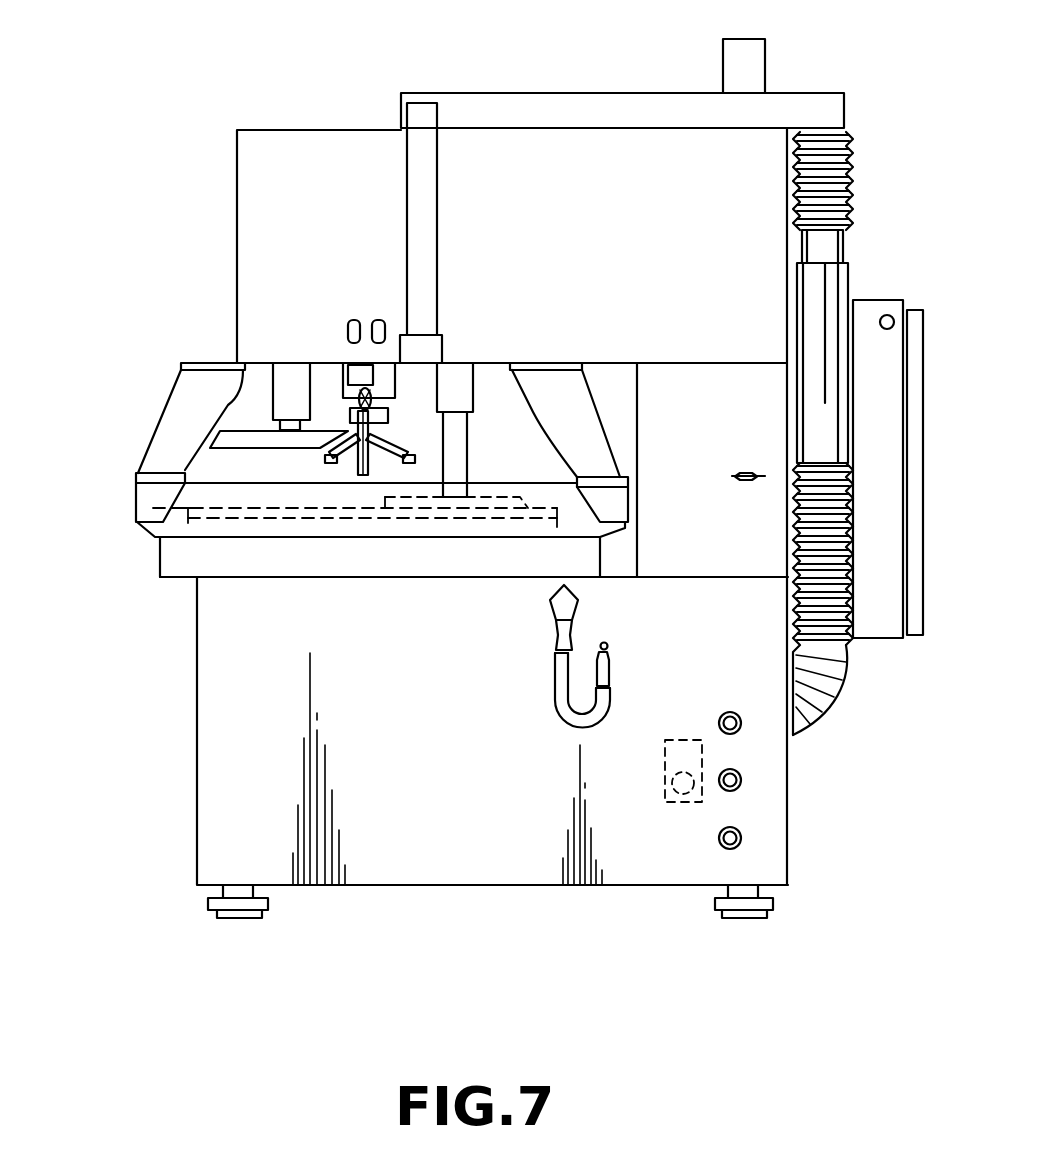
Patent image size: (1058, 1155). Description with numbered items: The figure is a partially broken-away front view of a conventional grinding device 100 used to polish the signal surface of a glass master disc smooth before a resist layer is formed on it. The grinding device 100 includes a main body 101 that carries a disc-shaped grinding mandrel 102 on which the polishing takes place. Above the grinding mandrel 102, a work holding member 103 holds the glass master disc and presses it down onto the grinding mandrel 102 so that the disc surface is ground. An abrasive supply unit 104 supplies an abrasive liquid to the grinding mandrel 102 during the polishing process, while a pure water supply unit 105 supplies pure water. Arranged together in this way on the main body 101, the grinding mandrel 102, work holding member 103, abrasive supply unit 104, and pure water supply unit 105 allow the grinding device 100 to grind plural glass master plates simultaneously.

The grinding device 100 is at (193, 182).
The main body 101 is at (227, 727).
The grinding mandrel 102 is at (227, 525).
The work holding member 103 is at (287, 383).
The abrasive supply unit 104 is at (378, 457).
The pure water supply unit 105 is at (330, 462).